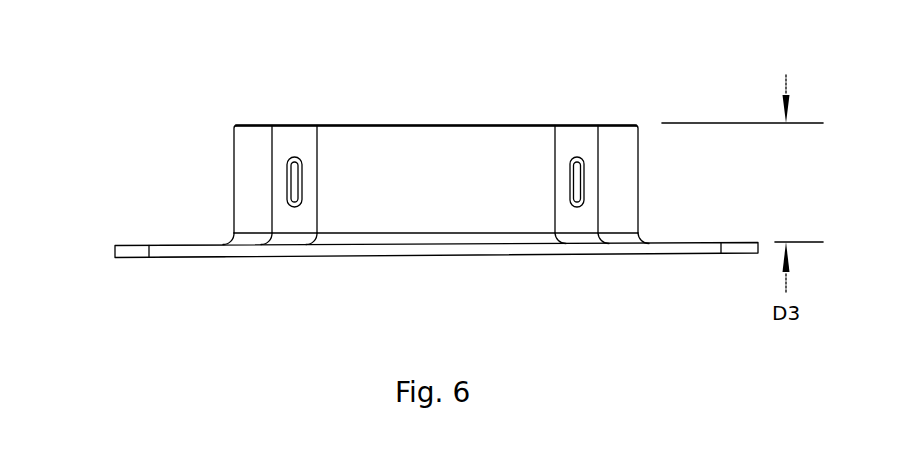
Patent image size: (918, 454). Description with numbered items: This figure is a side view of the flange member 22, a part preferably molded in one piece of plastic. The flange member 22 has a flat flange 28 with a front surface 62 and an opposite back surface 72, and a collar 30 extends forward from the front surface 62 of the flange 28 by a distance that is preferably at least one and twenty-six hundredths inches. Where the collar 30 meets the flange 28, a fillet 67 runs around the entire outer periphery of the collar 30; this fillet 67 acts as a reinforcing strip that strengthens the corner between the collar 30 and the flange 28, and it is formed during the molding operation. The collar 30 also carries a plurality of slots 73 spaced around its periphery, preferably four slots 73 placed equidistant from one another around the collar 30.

The flange member 22 is at (129, 89).
The flange 28 is at (162, 245).
The collar 30 is at (454, 188).
The front surface 62 is at (197, 270).
The fillet 67 is at (647, 243).
The back surface 72 is at (197, 233).
The slots 73 is at (302, 180).